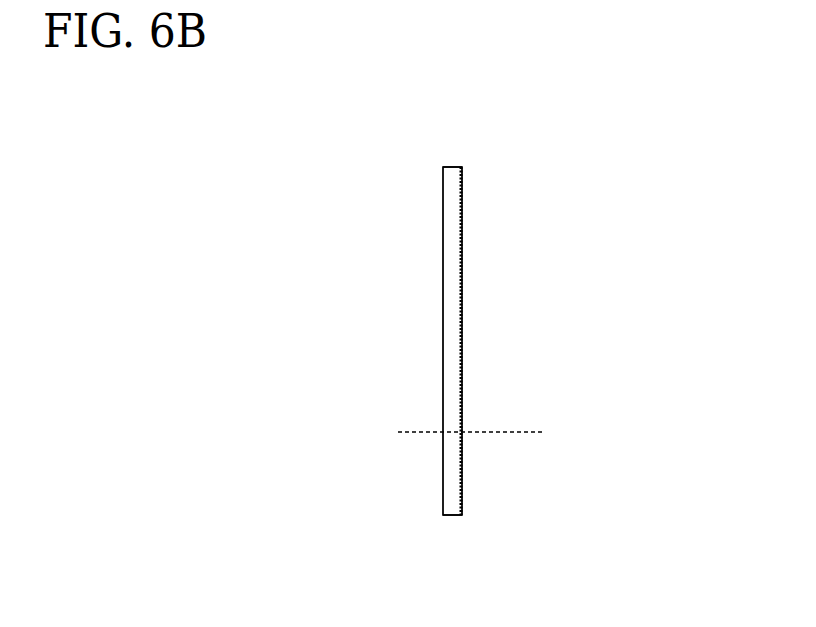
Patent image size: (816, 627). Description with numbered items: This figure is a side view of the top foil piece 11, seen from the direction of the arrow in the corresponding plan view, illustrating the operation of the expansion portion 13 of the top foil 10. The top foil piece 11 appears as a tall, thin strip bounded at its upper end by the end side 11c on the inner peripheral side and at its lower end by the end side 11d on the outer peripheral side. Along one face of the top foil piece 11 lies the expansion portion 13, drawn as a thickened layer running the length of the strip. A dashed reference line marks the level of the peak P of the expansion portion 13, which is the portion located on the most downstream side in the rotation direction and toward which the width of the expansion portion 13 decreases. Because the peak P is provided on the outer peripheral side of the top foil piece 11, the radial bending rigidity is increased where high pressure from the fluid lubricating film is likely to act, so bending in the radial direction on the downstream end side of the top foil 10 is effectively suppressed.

The top foil 10 is at (430, 274).
The top foil piece 11 is at (444, 341).
The expansion portion 13 is at (452, 305).
The end side on the inner peripheral side 11c is at (452, 166).
The end side on the outer peripheral side 11d is at (449, 516).
The peak P is at (510, 433).